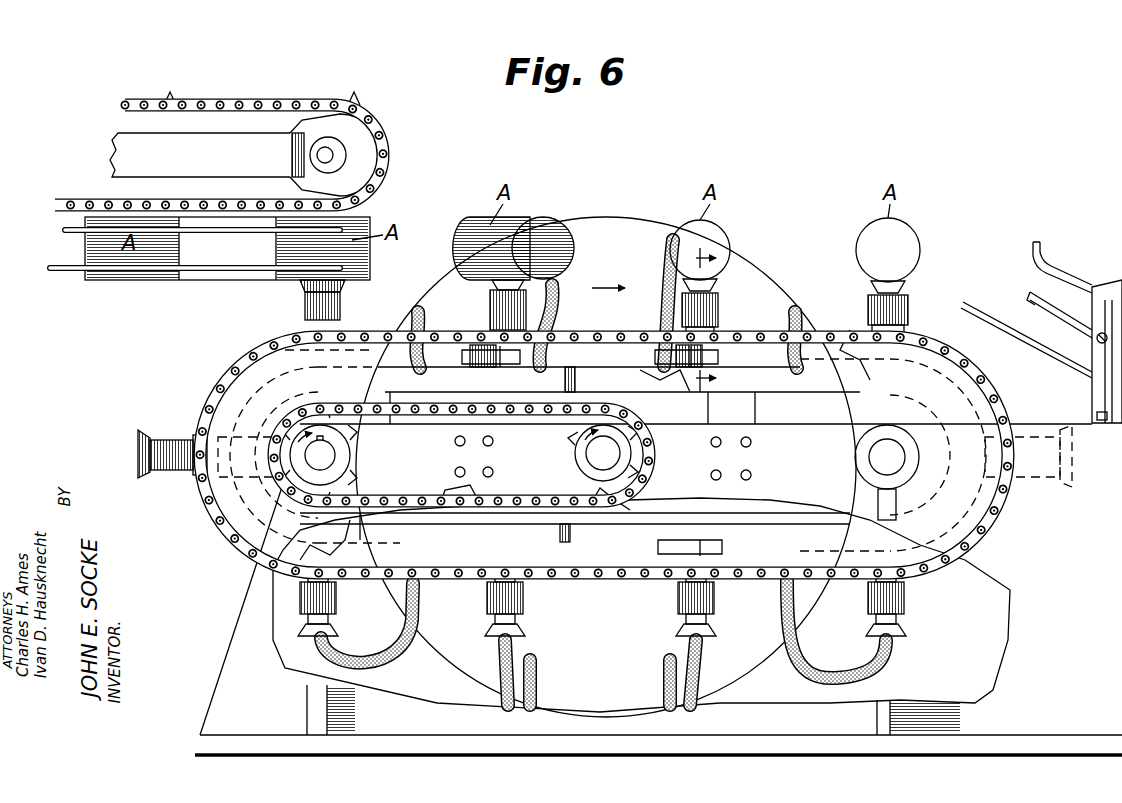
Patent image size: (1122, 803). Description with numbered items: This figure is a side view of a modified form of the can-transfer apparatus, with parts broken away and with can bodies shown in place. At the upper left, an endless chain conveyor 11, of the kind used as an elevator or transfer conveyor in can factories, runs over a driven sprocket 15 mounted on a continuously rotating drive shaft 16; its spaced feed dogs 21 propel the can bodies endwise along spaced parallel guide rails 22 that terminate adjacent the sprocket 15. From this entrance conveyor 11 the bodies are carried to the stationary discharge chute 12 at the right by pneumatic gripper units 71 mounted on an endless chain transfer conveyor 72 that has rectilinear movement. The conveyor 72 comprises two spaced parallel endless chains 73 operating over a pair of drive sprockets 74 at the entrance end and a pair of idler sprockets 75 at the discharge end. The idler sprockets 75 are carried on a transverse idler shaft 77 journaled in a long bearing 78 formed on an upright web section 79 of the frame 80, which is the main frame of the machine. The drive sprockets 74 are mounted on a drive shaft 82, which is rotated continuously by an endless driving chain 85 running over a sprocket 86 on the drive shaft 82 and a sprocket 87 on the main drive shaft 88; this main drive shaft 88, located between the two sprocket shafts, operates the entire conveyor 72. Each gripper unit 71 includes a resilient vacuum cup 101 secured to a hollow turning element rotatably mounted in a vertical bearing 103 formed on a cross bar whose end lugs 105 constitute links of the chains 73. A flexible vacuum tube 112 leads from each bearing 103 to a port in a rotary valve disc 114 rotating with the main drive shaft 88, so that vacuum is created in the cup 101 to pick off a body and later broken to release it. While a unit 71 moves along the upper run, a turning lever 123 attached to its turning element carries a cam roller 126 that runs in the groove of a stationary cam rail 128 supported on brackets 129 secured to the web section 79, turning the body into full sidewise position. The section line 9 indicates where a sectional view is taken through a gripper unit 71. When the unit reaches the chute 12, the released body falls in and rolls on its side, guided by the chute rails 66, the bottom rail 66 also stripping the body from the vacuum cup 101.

The conveyor 11 is at (283, 104).
The discharge chute 12 is at (1075, 272).
The driven sprocket 15 is at (360, 138).
The drive shaft 16 is at (322, 155).
The feed dogs 21 is at (85, 216).
The guide rails 22 is at (70, 232).
The rails 66 is at (1030, 292).
The pneumatic gripper units 71 is at (440, 313).
The endless chain transfer conveyor 72 is at (818, 332).
The endless chains 73 is at (765, 333).
The drive sprockets 74 is at (248, 378).
The idler sprockets 75 is at (952, 383).
The idler shaft 77 is at (880, 455).
The long bearing 78 is at (868, 468).
The upright web section 79 is at (1018, 602).
The frame 80 is at (1032, 748).
The drive shaft 82 is at (330, 452).
The endless driving chain 85 is at (428, 500).
The sprocket 86 is at (352, 476).
The sprocket 87 is at (575, 455).
The main drive shaft 88 is at (612, 452).
The section line 9- 9 is at (696, 320).
The vacuum cups 101 is at (492, 283).
The bearing 103 is at (540, 302).
The lugs 105 is at (502, 335).
The flexible vacuum tube 112 is at (556, 300).
The rotary valve disc 114 is at (607, 232).
The turning lever 123 is at (495, 366).
The cam roller 126 is at (480, 366).
The stationary cam rail 128 is at (580, 455).
The brackets 129 is at (462, 422).